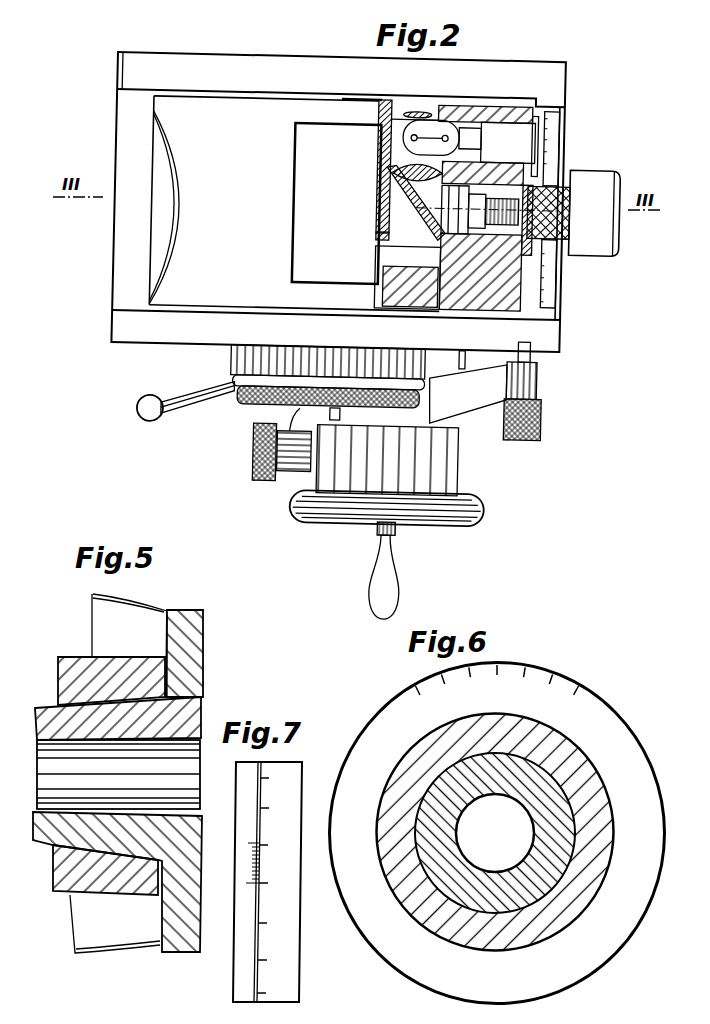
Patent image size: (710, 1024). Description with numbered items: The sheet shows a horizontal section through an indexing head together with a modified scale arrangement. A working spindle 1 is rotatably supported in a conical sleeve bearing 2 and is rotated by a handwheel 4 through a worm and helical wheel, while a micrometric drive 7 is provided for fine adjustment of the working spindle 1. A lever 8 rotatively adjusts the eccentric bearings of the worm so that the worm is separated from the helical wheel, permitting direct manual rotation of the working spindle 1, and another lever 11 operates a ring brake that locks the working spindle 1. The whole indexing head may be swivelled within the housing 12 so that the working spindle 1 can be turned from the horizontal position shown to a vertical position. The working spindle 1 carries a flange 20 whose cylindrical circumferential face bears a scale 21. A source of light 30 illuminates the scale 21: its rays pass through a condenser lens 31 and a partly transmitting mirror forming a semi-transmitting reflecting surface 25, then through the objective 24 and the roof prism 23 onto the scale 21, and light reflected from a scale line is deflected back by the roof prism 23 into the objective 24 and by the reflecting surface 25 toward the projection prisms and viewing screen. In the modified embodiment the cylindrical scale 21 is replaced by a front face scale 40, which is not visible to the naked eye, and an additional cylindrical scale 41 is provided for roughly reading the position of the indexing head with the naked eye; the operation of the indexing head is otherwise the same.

In FIG. 2, the working spindle 1 is at (601, 229).
In FIG. 5, the working spindle 1 is at (52, 826).
In FIG. 6, the working spindle 1 is at (450, 862).
In FIG. 5, the conical sleeve bearing 2 is at (70, 880).
In FIG. 6, the conical sleeve bearing 2 is at (413, 898).
In FIG. 2, the handwheel 4 is at (386, 504).
In FIG. 2, the micrometric drive 7 is at (267, 475).
In FIG. 2, the lever 8 is at (524, 436).
In FIG. 2, the lever 11 is at (158, 396).
In FIG. 2, the housing 12 is at (260, 74).
In FIG. 2, the flange 20 is at (572, 133).
In FIG. 5, the flange 20 is at (190, 640).
In FIG. 6, the flange 20 is at (398, 947).
In FIG. 2, the scale 21 is at (565, 118).
In FIG. 2, the roof prism 23 is at (553, 185).
In FIG. 2, the objective 24 is at (505, 219).
In FIG. 2, the semi-transmitting reflecting surface 25 is at (422, 198).
In FIG. 2, the source of light 30 is at (434, 123).
In FIG. 2, the condenser lens 31 is at (392, 164).
In FIG. 5, the front face scale 40 is at (168, 628).
In FIG. 6, the front face scale 40 is at (538, 682).
In FIG. 5, the additional cylindrical scale 41 is at (185, 612).
In FIG. 7, the additional cylindrical scale 41 is at (284, 792).